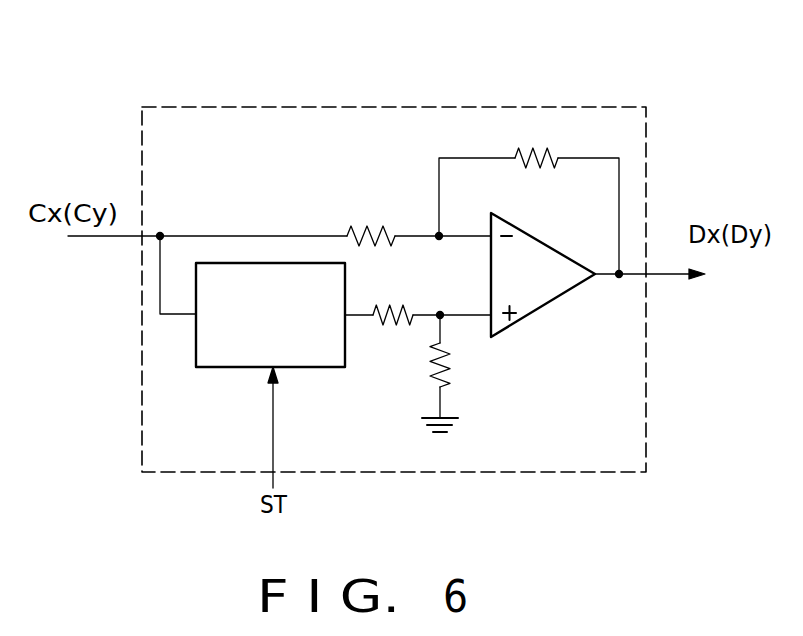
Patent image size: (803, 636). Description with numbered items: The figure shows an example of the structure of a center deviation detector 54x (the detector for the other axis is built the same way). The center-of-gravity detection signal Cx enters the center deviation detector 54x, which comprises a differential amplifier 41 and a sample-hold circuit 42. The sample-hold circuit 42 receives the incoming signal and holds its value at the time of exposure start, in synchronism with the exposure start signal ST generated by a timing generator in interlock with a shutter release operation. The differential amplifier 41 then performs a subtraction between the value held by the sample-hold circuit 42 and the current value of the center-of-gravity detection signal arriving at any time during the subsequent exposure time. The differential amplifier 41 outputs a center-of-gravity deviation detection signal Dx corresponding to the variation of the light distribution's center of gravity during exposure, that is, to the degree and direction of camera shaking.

The center deviation detector 54x is at (258, 106).
The sample-hold circuit 42 is at (305, 367).
The differential amplifier 41 is at (562, 298).